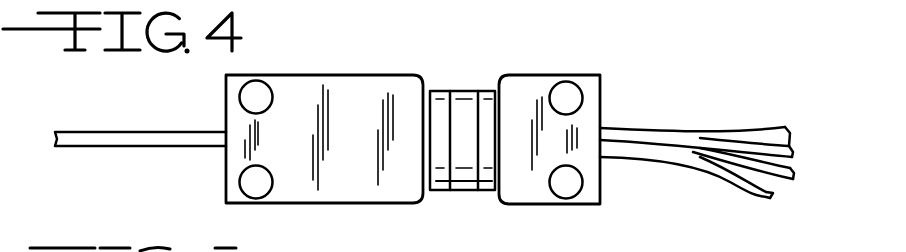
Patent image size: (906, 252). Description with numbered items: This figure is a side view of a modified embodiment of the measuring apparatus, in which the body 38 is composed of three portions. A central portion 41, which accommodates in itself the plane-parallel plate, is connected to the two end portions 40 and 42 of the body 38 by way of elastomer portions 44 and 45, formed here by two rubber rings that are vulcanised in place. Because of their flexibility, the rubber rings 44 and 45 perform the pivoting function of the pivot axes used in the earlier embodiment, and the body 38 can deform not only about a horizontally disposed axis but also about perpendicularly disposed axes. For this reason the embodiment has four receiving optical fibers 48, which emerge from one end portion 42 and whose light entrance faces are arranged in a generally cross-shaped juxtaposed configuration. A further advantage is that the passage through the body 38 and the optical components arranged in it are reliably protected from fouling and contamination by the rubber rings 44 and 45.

The body 38 is at (353, 68).
The end portion 40 is at (266, 152).
The central portion 41 is at (460, 191).
The end portion 42 is at (533, 190).
The elastomer portion 44 is at (437, 191).
The elastomer portion 45 is at (485, 191).
The receiving optical fibers 48 is at (763, 130).